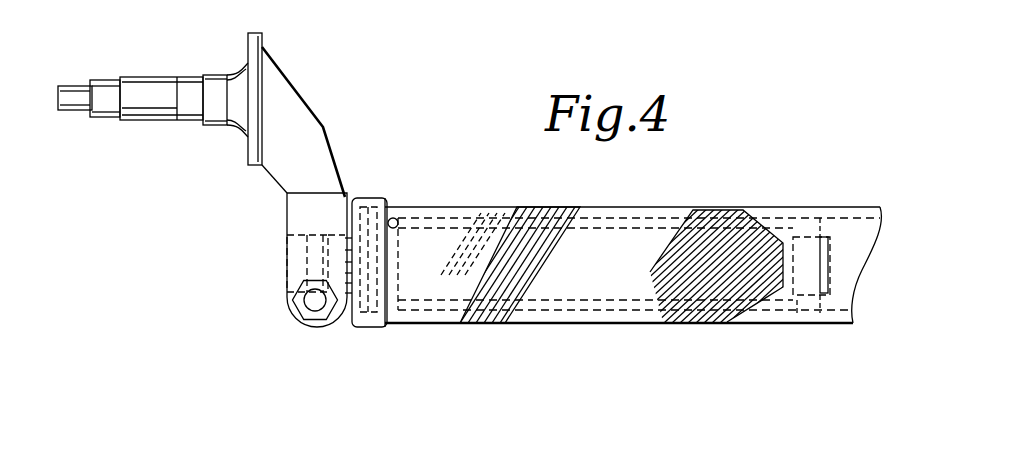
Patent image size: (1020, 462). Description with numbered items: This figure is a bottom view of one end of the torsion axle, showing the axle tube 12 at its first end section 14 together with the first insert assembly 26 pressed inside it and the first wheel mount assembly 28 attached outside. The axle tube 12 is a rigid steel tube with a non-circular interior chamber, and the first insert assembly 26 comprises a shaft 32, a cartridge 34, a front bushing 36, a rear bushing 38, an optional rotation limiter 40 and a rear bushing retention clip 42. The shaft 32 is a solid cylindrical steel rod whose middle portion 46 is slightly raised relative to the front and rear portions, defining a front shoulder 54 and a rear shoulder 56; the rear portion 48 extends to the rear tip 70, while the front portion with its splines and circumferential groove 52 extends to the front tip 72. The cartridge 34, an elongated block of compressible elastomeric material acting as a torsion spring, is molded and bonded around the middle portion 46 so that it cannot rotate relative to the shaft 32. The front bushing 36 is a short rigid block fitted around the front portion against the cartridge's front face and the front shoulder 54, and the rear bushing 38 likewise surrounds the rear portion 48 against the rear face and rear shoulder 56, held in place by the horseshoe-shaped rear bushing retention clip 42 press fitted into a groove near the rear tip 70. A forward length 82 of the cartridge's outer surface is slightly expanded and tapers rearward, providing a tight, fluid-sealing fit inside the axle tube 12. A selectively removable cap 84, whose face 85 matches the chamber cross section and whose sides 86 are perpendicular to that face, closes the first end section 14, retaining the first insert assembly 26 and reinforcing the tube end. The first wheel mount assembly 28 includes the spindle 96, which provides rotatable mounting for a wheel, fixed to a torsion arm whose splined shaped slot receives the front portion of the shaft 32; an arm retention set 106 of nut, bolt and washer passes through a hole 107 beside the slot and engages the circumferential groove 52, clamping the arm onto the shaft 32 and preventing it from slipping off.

The axle tube 12 is at (697, 210).
The first end section 14 is at (510, 126).
The first insert assembly 26 is at (640, 210).
The first wheel mount assembly 28 is at (288, 110).
The shaft 32 is at (695, 315).
The cartridge 34 is at (553, 310).
The front bushing 36 is at (387, 327).
The rear bushing 38 is at (808, 305).
The rotation limiter 40 is at (365, 300).
The rear bushing retention clip 42 is at (828, 232).
The middle portion 46 is at (583, 210).
The rear portion 48 is at (822, 236).
The circumferential groove 52 is at (315, 240).
The front shoulder 54 is at (392, 211).
The rear shoulder 56 is at (807, 236).
The rear tip 70 is at (850, 280).
The front tip 72 is at (285, 260).
The forward length 82 is at (420, 313).
The cap 84 is at (358, 199).
The face 85 is at (345, 197).
The sides 86 is at (396, 204).
The spindle 96 is at (142, 92).
The arm retention set 106 is at (298, 310).
The hole 107 is at (310, 320).